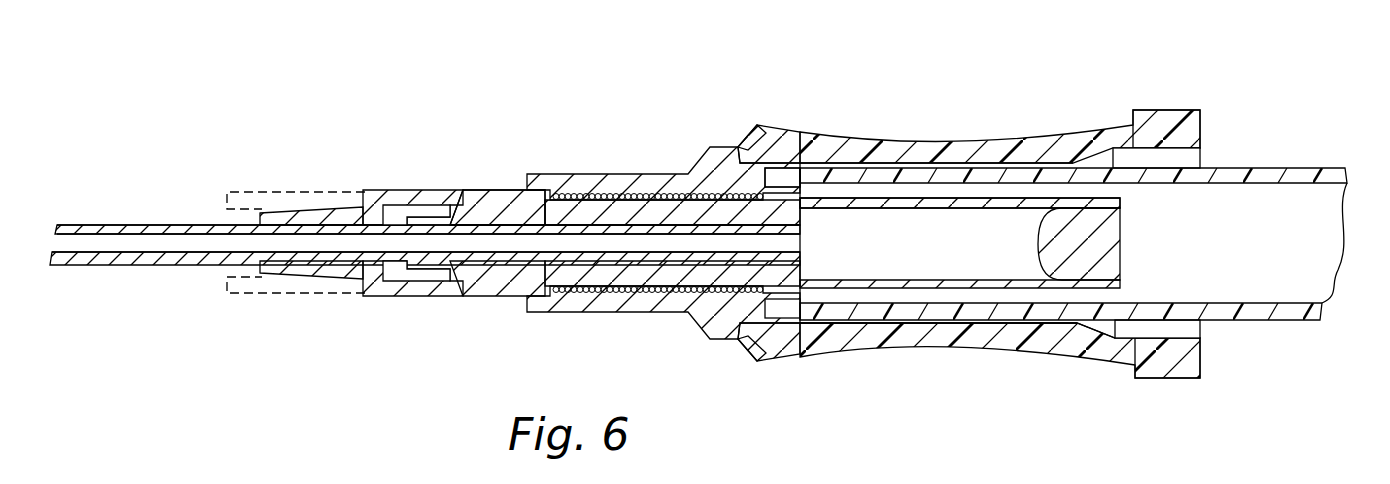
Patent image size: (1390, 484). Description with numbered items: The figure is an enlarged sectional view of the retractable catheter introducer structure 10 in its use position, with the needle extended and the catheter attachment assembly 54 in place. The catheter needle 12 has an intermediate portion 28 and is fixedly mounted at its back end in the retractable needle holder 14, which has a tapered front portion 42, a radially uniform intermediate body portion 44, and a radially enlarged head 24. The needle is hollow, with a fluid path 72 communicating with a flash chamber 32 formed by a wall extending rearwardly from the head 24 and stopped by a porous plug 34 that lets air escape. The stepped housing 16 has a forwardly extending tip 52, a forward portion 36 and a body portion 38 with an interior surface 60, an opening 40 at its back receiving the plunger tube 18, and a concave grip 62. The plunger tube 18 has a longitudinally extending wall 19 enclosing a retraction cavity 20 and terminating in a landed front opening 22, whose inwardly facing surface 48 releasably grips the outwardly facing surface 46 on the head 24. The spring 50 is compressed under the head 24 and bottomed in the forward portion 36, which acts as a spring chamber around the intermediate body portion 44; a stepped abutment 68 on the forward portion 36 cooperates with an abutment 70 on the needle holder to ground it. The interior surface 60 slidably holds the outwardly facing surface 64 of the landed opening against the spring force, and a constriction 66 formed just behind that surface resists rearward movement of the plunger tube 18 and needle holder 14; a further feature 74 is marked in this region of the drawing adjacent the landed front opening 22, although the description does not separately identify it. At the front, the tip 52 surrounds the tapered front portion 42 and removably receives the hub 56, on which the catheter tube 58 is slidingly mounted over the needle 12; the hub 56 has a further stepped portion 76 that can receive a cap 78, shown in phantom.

The catheter introducer structure 10 is at (676, 60).
The catheter needle 12 is at (425, 268).
The intermediate portion 28 is at (122, 236).
The retractable needle holder 14 is at (667, 216).
The stepped housing 16 is at (1155, 109).
The plunger tube 18 is at (1335, 167).
The longitudinally extending wall 19 is at (1322, 303).
The retraction cavity 20 is at (1232, 243).
The landed front opening 22 is at (785, 150).
The head 24 is at (805, 290).
The flash chamber 32 is at (1062, 201).
The porous plug 34 is at (1120, 250).
The forward portion 36 is at (613, 174).
The body portion 38 is at (840, 136).
The opening 40 is at (1203, 330).
The tapered front portion 42 is at (513, 210).
The intermediate body portion 44 is at (632, 284).
The outwardly facing surface 46 is at (792, 300).
The inwardly facing surface 48 is at (797, 165).
The spring 50 is at (557, 262).
The forwardly extending tip 52 is at (477, 190).
The catheter attachment assembly 54 is at (340, 313).
The hub 56 is at (445, 297).
The catheter tube 58 is at (122, 225).
The interior surface 60 is at (1015, 322).
The concave grip 62 is at (987, 342).
The outwardly facing surface 64 is at (782, 178).
The constriction 66 is at (805, 176).
The stepped abutment 68 is at (557, 270).
The cooperating abutment 70 is at (543, 210).
The fluid path 72 is at (185, 246).
The groove 74 is at (735, 180).
The stepped portion 76 is at (323, 210).
The cap 78 is at (250, 192).